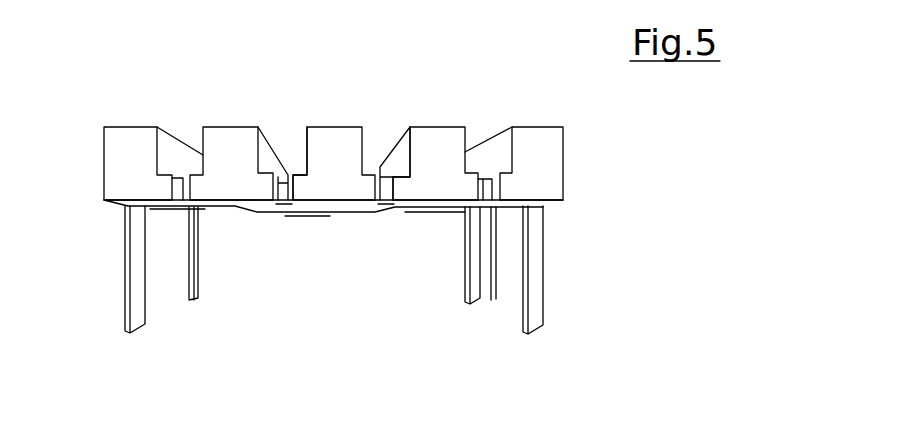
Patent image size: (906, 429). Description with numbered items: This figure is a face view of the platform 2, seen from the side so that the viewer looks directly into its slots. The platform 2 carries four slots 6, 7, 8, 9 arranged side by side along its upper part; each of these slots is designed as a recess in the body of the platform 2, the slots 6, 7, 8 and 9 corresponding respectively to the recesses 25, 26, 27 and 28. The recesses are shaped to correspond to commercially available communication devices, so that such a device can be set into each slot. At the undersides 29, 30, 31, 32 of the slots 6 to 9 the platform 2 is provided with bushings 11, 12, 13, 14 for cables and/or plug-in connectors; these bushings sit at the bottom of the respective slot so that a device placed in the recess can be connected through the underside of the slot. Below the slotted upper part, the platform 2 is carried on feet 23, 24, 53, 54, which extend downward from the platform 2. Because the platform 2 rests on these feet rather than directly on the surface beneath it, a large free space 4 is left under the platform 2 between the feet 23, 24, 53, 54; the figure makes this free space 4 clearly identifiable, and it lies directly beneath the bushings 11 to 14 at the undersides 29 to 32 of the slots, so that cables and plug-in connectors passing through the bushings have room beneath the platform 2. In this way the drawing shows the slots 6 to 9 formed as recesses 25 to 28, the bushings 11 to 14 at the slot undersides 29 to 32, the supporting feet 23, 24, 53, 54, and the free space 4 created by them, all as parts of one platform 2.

The platform 2 is at (553, 178).
The free space 4 is at (337, 245).
The slot 6 is at (142, 125).
The recess 25 is at (168, 154).
The slot 7 is at (239, 125).
The recess 26 is at (288, 172).
The slot 8 is at (351, 125).
The recess 27 is at (385, 167).
The slot 9 is at (458, 125).
The recess 28 is at (500, 150).
The underside of slot 29 is at (195, 177).
The underside of slot 30 is at (296, 176).
The underside of slot 31 is at (410, 127).
The underside of slot 32 is at (503, 172).
The bushing 11 is at (194, 288).
The bushing 12 is at (283, 190).
The bushing 13 is at (385, 192).
The bushing 14 is at (492, 192).
The foot 23 is at (535, 312).
The foot 24 is at (470, 272).
The foot 53 is at (138, 308).
The foot 54 is at (181, 193).